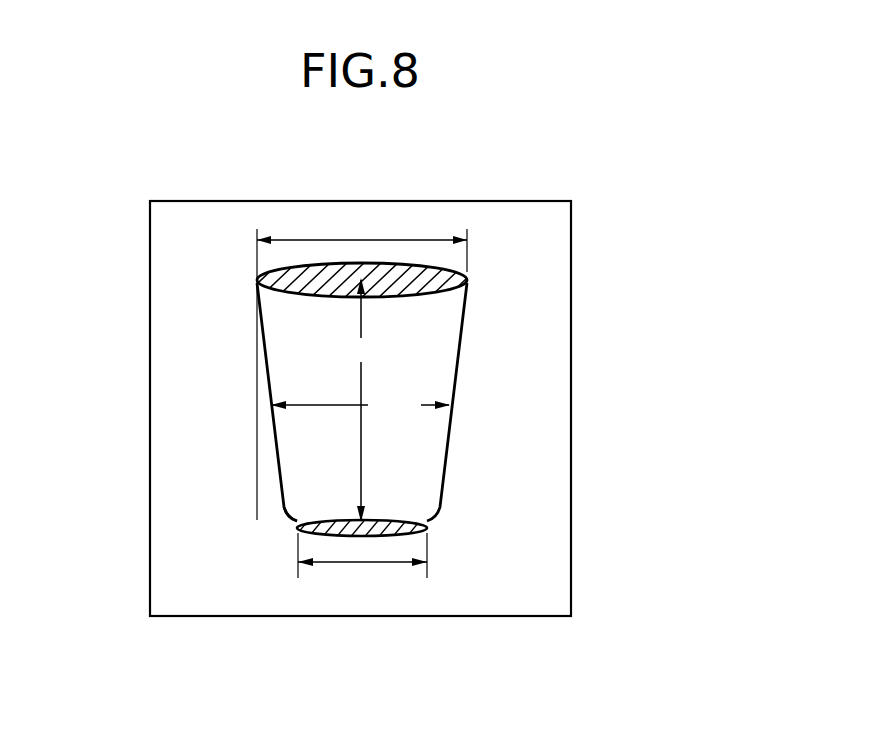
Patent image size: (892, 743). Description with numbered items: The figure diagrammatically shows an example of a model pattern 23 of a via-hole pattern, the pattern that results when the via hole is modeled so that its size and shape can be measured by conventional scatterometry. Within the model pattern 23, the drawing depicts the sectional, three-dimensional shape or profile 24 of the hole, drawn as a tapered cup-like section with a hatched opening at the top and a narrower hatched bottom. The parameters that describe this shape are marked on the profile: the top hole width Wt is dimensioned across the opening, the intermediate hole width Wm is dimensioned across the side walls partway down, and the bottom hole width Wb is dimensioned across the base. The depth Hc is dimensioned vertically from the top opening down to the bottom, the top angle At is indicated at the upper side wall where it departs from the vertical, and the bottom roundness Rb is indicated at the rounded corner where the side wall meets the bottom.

The model pattern 23 is at (540, 200).
The sectional shape of the hole 24 is at (446, 455).
The top angle At is at (258, 367).
The top hole width Wt is at (362, 241).
The depth Hc is at (354, 400).
The intermediate hole width Wm is at (360, 404).
The bottom hole width Wb is at (362, 565).
The bottom roundness Rb is at (298, 508).